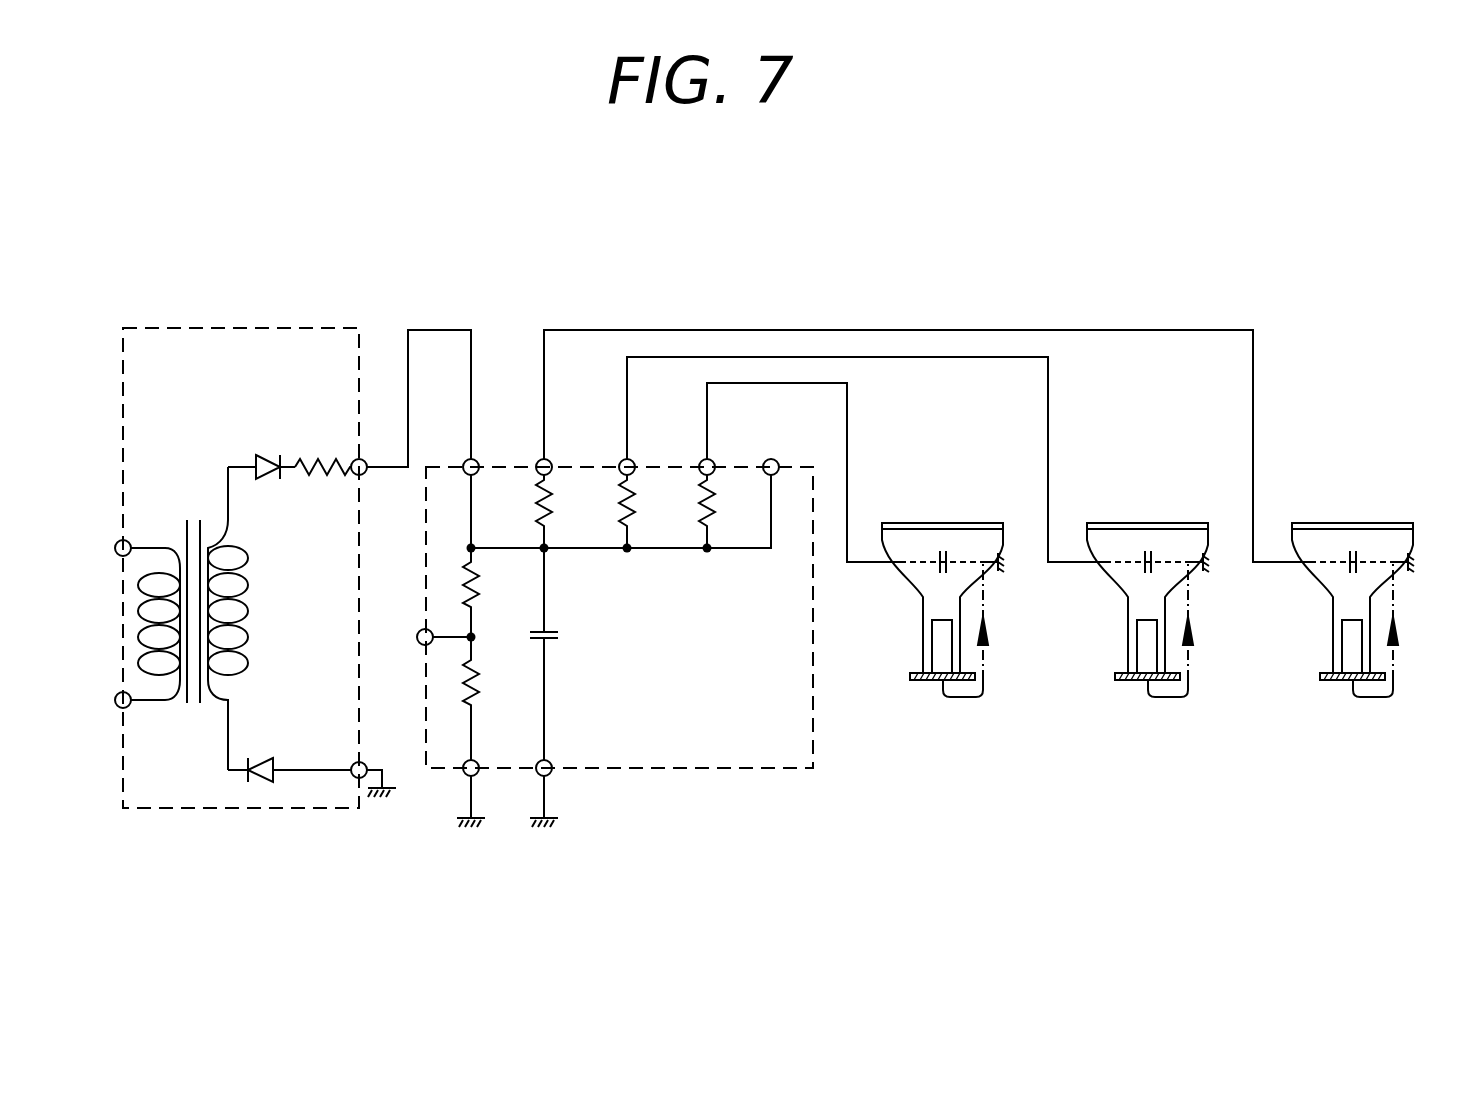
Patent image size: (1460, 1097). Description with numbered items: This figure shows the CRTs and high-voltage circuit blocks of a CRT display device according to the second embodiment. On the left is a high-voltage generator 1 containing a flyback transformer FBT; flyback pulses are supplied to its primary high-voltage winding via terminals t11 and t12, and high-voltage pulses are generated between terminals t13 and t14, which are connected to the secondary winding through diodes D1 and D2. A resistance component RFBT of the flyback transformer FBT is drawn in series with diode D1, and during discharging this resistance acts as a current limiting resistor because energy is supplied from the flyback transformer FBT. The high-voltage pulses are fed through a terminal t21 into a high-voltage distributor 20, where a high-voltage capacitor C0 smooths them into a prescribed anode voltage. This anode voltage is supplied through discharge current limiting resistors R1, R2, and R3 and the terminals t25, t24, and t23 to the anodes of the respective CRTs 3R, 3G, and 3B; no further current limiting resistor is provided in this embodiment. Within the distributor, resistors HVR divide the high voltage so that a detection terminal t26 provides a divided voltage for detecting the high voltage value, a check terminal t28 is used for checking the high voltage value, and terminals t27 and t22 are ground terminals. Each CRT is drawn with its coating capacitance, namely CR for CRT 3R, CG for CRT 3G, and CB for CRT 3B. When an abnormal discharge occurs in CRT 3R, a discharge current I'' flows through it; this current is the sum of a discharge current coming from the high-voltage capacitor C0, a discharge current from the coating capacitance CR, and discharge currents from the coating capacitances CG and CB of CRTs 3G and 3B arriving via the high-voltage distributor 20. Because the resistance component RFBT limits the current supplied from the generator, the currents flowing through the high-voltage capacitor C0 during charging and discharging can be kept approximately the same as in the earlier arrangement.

The high-voltage generator 1 is at (245, 808).
The high-voltage distributor 20 is at (655, 768).
The flyback transformer FBT is at (200, 520).
The terminal t11 is at (128, 543).
The terminal t12 is at (128, 706).
The terminal t13 is at (363, 474).
The terminal t14 is at (364, 764).
The diode D1 is at (261, 494).
The diode D2 is at (289, 751).
The resistance component of the flyback transformer RFBT is at (320, 447).
The terminal t21 is at (476, 461).
The ground terminal t22 is at (549, 775).
The terminal t23 is at (549, 461).
The terminal t24 is at (632, 461).
The terminal t25 is at (712, 461).
The detection terminal t26 is at (423, 630).
The ground terminal t27 is at (466, 775).
The check terminal t28 is at (776, 461).
The discharge current limiting resistor R1 is at (728, 511).
The discharge current limiting resistor R2 is at (648, 511).
The discharge current limiting resistor R3 is at (566, 511).
The high-voltage capacitor C0 is at (566, 654).
The resistors HVR is at (485, 562).
The CRT 3R is at (953, 587).
The CRT 3G is at (1158, 587).
The CRT 3B is at (1363, 587).
The coating capacitance of CRT 3R CR is at (941, 554).
The coating capacitance of CRT 3G CG is at (1147, 554).
The coating capacitance of CRT 3B CB is at (1351, 554).
The discharge current I'' is at (1012, 652).